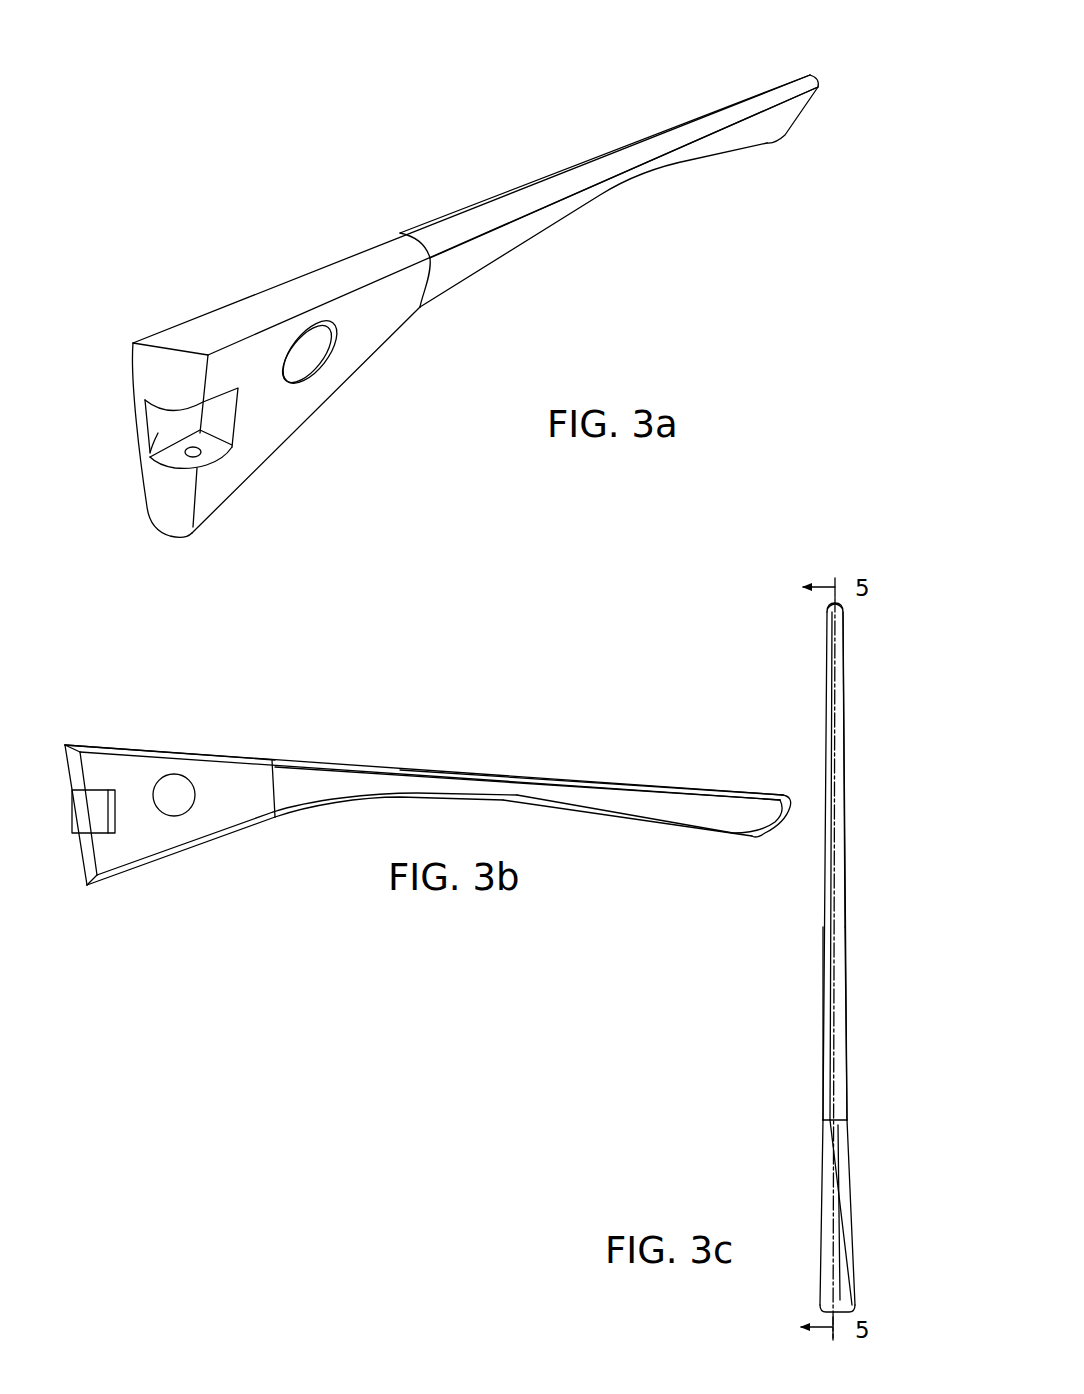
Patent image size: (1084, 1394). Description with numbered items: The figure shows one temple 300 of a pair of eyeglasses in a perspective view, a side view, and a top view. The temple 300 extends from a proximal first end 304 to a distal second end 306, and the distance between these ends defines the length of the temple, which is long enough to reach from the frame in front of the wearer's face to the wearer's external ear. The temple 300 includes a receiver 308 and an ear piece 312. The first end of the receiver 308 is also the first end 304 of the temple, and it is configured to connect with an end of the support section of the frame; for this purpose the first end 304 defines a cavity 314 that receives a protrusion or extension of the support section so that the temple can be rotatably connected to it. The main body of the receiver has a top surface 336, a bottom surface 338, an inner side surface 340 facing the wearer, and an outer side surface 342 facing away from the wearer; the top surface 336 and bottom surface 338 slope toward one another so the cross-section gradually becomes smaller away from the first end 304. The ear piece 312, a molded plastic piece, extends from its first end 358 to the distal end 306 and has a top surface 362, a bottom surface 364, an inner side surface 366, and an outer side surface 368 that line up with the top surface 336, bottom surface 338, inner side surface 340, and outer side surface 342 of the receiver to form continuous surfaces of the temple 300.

In FIG. 3a, the temple 300 is at (200, 167).
In FIG. 3b, the temple 300 is at (646, 724).
In FIG. 3c, the temple 300 is at (728, 1051).
In FIG. 3a, the first end 304 is at (180, 517).
In FIG. 3b, the first end 304 is at (87, 858).
In FIG. 3c, the first end 304 is at (837, 1302).
In FIG. 3a, the second end 306 is at (805, 83).
In FIG. 3b, the second end 306 is at (742, 813).
In FIG. 3c, the second end 306 is at (827, 600).
In FIG. 3a, the receiver 308 is at (315, 390).
In FIG. 3b, the receiver 308 is at (178, 830).
In FIG. 3c, the receiver 308 is at (832, 1155).
In FIG. 3a, the ear piece 312 is at (627, 147).
In FIG. 3b, the ear piece 312 is at (427, 790).
In FIG. 3c, the ear piece 312 is at (841, 777).
In FIG. 3a, the cavity 314 is at (156, 450).
In FIG. 3b, the cavity 314 is at (92, 810).
In FIG. 3a, the top surface 336 is at (262, 297).
In FIG. 3b, the top surface 336 is at (195, 760).
In FIG. 3c, the top surface 336 is at (838, 1247).
In FIG. 3b, the bottom surface 338 is at (138, 861).
In FIG. 3a, the inner side surface 340 is at (263, 413).
In FIG. 3c, the inner side surface 340 is at (852, 1187).
In FIG. 3c, the outer side surface 342 is at (822, 1188).
In FIG. 3a, the first end 358 is at (433, 290).
In FIG. 3b, the first end 358 is at (272, 770).
In FIG. 3c, the first end 358 is at (845, 1110).
In FIG. 3a, the top surface 362 is at (500, 200).
In FIG. 3b, the top surface 362 is at (555, 778).
In FIG. 3c, the top surface 362 is at (836, 888).
In FIG. 3b, the bottom surface 364 is at (662, 829).
In FIG. 3a, the inner side surface 366 is at (547, 213).
In FIG. 3b, the inner side surface 366 is at (312, 796).
In FIG. 3c, the inner side surface 366 is at (847, 988).
In FIG. 3c, the outer side surface 368 is at (823, 978).